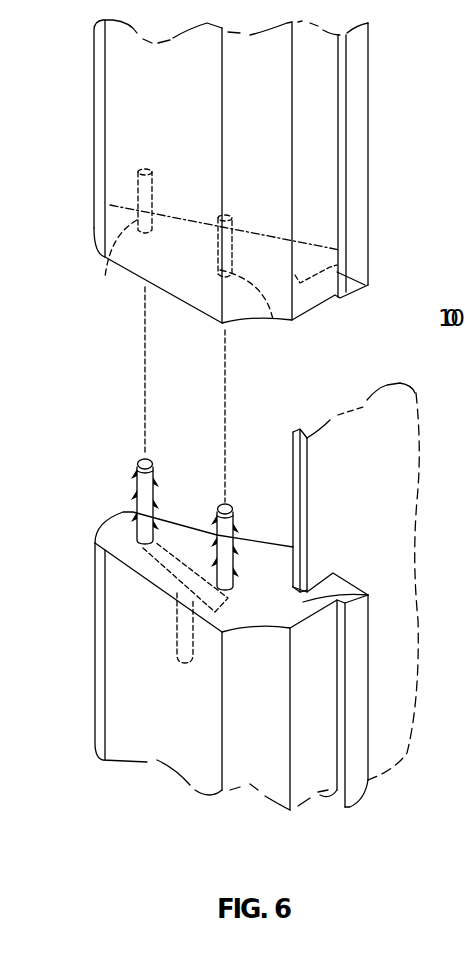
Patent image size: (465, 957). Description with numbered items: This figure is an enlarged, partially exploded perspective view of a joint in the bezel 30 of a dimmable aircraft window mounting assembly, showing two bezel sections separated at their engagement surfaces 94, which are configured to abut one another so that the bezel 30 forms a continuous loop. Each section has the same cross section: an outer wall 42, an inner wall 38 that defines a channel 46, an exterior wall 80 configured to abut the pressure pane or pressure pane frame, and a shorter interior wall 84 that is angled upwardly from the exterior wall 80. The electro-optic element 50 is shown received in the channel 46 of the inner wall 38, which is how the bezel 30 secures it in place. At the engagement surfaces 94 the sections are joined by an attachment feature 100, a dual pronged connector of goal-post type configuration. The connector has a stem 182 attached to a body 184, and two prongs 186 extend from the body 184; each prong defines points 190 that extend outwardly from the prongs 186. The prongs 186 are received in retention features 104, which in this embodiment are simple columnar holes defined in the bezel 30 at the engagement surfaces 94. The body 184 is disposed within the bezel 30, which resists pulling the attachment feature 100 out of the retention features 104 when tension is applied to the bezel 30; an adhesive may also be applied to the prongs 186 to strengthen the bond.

The bezel 30 is at (90, 137).
The outer wall 42 is at (147, 87).
The exterior wall 80 is at (313, 107).
The inner wall 38 is at (258, 232).
The channel 46 is at (318, 268).
The engagement surfaces 94 is at (314, 307).
The interior wall 84 is at (113, 210).
The retention features 104 is at (274, 330).
The attachment feature 100 is at (137, 456).
The points 190 is at (158, 482).
The body 184 is at (172, 567).
The stem 182 is at (180, 638).
The prongs 186 is at (120, 541).
The electro-optic element 50 is at (394, 459).